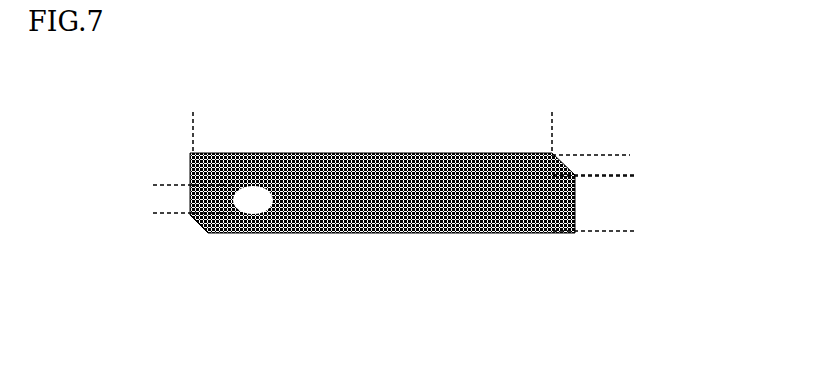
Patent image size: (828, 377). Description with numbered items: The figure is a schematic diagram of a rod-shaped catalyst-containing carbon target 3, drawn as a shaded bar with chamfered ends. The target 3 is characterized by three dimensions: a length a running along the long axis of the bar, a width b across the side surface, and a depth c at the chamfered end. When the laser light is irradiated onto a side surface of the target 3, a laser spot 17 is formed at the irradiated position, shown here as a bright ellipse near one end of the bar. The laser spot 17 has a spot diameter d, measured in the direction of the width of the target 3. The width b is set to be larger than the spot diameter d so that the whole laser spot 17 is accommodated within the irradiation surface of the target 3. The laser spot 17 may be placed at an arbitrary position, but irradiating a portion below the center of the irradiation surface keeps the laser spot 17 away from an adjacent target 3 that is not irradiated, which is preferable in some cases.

The rod-shaped catalyst-containing carbon target 3 is at (434, 240).
The laser spot 17 is at (251, 222).
The length a is at (372, 132).
The width b is at (600, 203).
The depth c is at (601, 159).
The spot diameter d is at (175, 197).